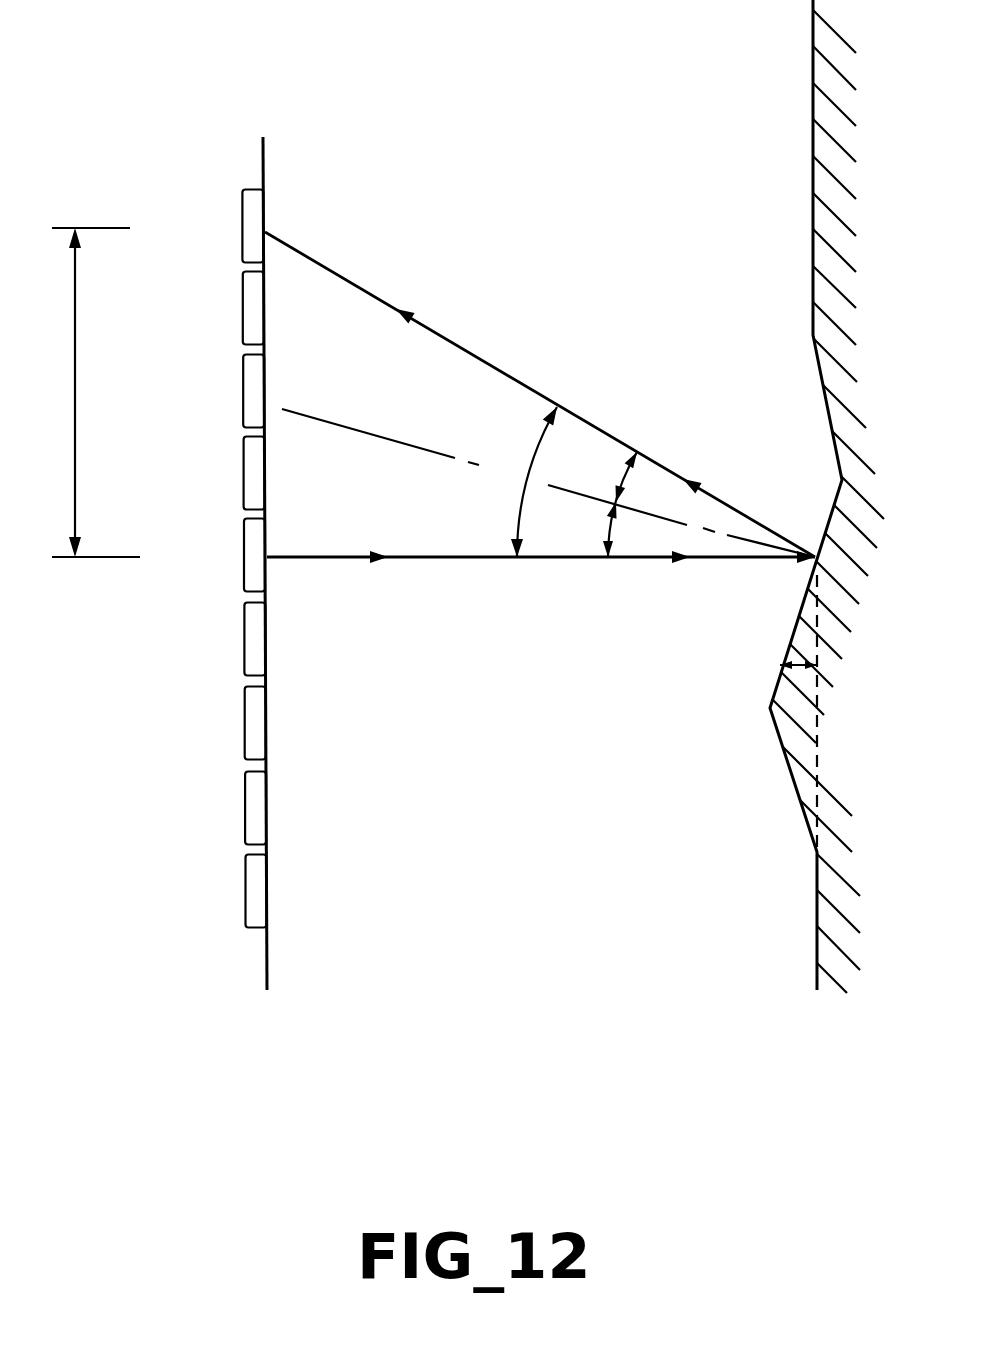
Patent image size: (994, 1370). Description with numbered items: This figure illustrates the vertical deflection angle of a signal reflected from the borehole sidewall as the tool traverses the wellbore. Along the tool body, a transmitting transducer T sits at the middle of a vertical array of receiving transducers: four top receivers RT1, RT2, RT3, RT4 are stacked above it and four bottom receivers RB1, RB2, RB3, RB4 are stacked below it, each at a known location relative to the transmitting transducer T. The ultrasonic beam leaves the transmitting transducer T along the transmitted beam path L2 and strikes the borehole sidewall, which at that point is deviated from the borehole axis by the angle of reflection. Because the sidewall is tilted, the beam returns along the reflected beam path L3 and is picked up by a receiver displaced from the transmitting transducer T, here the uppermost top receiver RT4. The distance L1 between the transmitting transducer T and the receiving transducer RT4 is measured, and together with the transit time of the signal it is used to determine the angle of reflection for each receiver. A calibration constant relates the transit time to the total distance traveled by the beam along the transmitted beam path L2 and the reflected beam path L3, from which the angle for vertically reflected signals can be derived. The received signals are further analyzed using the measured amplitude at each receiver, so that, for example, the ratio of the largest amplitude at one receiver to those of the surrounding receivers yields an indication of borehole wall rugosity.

The top receiver RT4 is at (237, 228).
The top receiver RT3 is at (206, 308).
The top receiver RT2 is at (207, 391).
The top receiver RT1 is at (207, 473).
The transmitting transducer T is at (238, 557).
The bottom receiver RB1 is at (207, 639).
The bottom receiver RB2 is at (207, 723).
The bottom receiver RB3 is at (207, 808).
The bottom receiver RB4 is at (207, 891).
The receiver distance L1 is at (96, 392).
The transmitted beam path L2 is at (541, 573).
The reflected beam path L3 is at (540, 394).